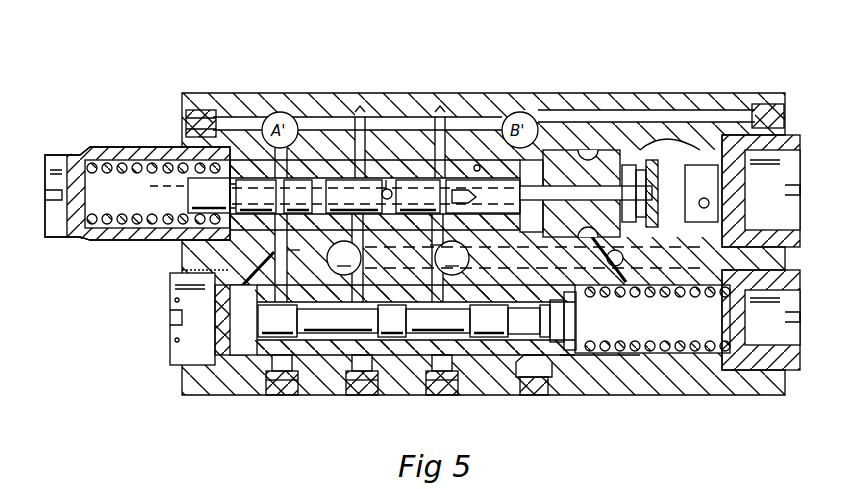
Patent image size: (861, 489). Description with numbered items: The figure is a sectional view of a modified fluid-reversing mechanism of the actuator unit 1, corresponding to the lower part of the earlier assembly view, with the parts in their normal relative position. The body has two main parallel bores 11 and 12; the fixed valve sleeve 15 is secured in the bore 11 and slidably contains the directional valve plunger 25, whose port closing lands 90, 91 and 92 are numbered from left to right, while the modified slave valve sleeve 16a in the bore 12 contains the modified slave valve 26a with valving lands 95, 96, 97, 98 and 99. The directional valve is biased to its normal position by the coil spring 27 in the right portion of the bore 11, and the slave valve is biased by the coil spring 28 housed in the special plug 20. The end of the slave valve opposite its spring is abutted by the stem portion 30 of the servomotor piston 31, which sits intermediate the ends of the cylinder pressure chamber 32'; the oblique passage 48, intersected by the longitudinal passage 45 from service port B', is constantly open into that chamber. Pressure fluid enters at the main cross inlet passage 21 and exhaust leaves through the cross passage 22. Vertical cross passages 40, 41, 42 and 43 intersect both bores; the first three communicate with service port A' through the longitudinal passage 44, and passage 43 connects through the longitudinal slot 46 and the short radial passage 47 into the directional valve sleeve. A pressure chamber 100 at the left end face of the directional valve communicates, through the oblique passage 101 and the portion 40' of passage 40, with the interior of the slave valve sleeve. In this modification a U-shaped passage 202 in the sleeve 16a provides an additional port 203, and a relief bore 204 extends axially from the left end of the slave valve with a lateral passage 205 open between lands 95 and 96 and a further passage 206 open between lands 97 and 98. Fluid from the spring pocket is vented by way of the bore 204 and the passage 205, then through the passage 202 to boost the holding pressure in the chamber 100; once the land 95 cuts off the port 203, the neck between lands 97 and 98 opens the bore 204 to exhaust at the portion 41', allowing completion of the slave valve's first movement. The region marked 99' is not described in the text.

The actuator unit 1 is at (613, 385).
The main bore 11 is at (655, 385).
The main bore 12 is at (478, 165).
The valve sleeve 15 is at (408, 340).
The slave valve sleeve 16a is at (325, 186).
The sealing plug 20 is at (100, 240).
The main cross inlet passage 21 is at (452, 258).
The cross passage 22 is at (344, 258).
The directional valve plunger 25 is at (336, 323).
The slave valve 26a is at (142, 240).
The coil spring 27 is at (676, 297).
The coil spring 28 is at (107, 162).
The stem portion 30 is at (570, 180).
The servomotor piston 31 is at (640, 175).
The cylinder pressure chamber 32' is at (701, 193).
The vertical cross passage 40 is at (241, 354).
The passage portion 40' is at (301, 249).
The vertical cross passage 41 is at (294, 391).
The passage portion 41' is at (423, 241).
The vertical cross passage 42 is at (362, 362).
The vertical cross passage 43 is at (532, 380).
The longitudinal drilled passage 44 is at (226, 118).
The longitudinal drilled passage 45 is at (608, 115).
The longitudinal slot 46 is at (512, 305).
The radial passage 47 is at (490, 300).
The oblique passage 48 is at (680, 138).
The port closing land 90 is at (277, 321).
The port closing land 91 is at (392, 321).
The port closing land 92 is at (489, 321).
The valving land 95 is at (262, 188).
The valving land 96 is at (300, 186).
The valving land 97 is at (372, 188).
The valving land 98 is at (410, 188).
The valving land 99 is at (483, 196).
The block 99' is at (531, 196).
The pressure chamber 100 is at (248, 327).
The oblique passage 101 is at (212, 304).
The U-shaped passage 202 is at (280, 250).
The port 203 is at (187, 195).
The relief bore 204 is at (150, 186).
The lateral passage 205 is at (282, 185).
The passage 206 is at (378, 185).